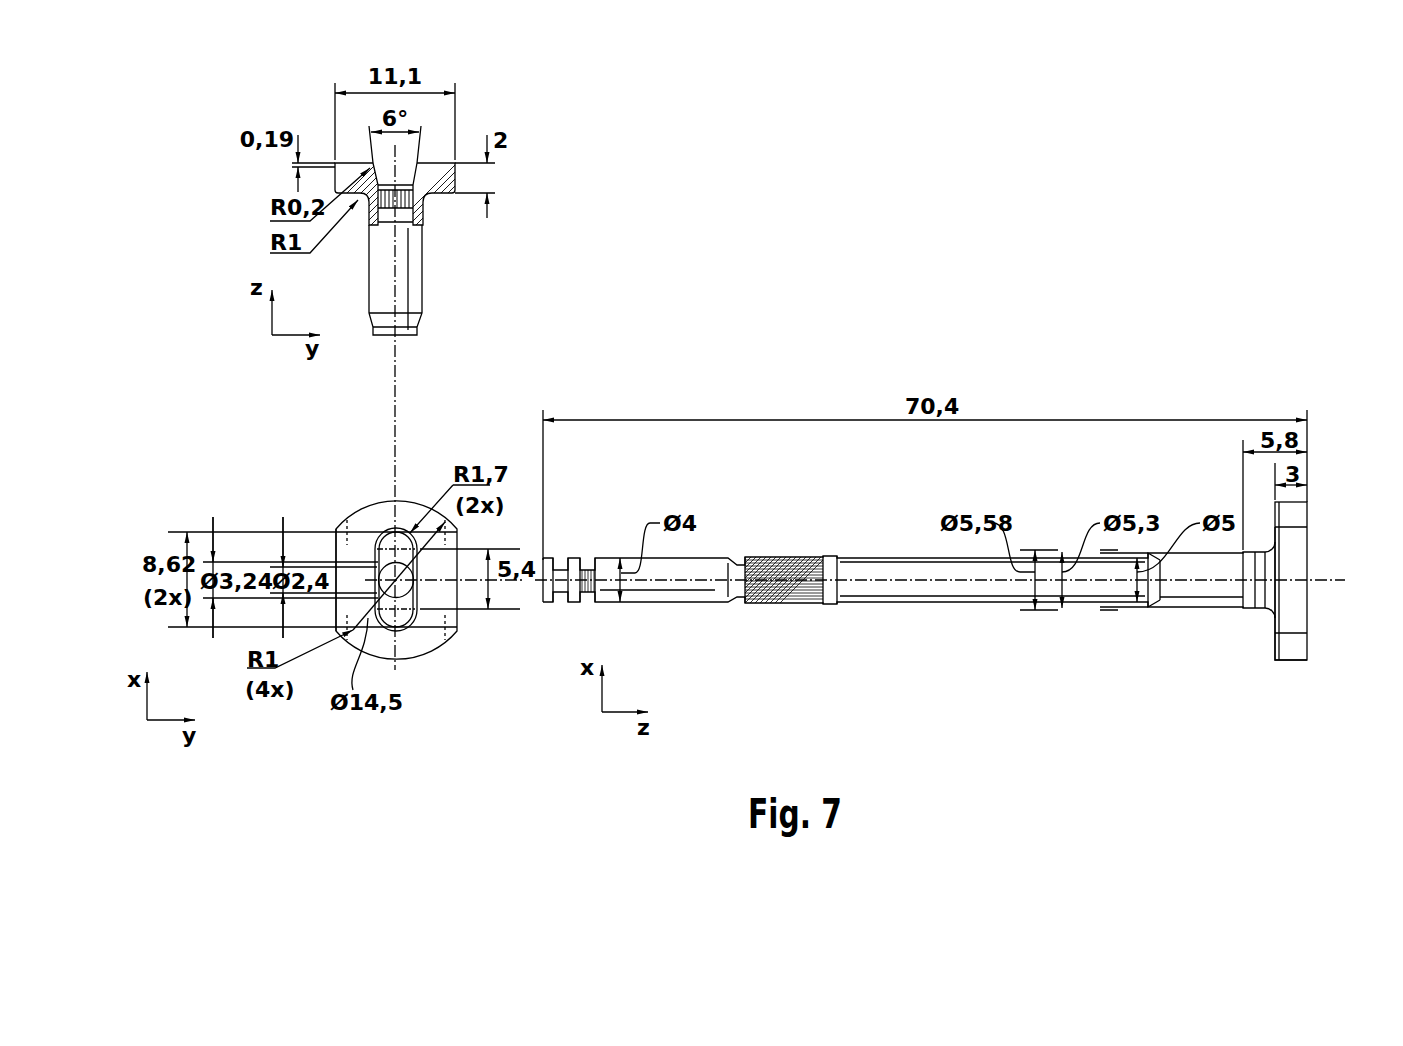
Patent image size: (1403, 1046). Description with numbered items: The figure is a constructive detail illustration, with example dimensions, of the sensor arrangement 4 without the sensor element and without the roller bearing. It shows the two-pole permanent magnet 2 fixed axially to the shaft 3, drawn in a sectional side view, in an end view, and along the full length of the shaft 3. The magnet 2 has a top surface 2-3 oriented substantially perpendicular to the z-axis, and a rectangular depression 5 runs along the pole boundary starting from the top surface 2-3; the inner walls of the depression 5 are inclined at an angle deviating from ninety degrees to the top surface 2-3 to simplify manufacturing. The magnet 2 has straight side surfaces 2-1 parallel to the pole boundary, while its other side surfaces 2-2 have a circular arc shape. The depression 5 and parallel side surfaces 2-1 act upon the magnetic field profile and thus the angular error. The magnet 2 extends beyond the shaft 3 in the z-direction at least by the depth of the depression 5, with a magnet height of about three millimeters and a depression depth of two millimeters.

The permanent magnet 2 is at (453, 198).
The side surfaces 2-1 is at (1288, 607).
The other side surfaces 2-2 is at (1290, 645).
The top surface 2-3 is at (358, 520).
The shaft 3 is at (407, 283).
The sensor arrangement 4 is at (690, 385).
The depression 5 is at (388, 553).